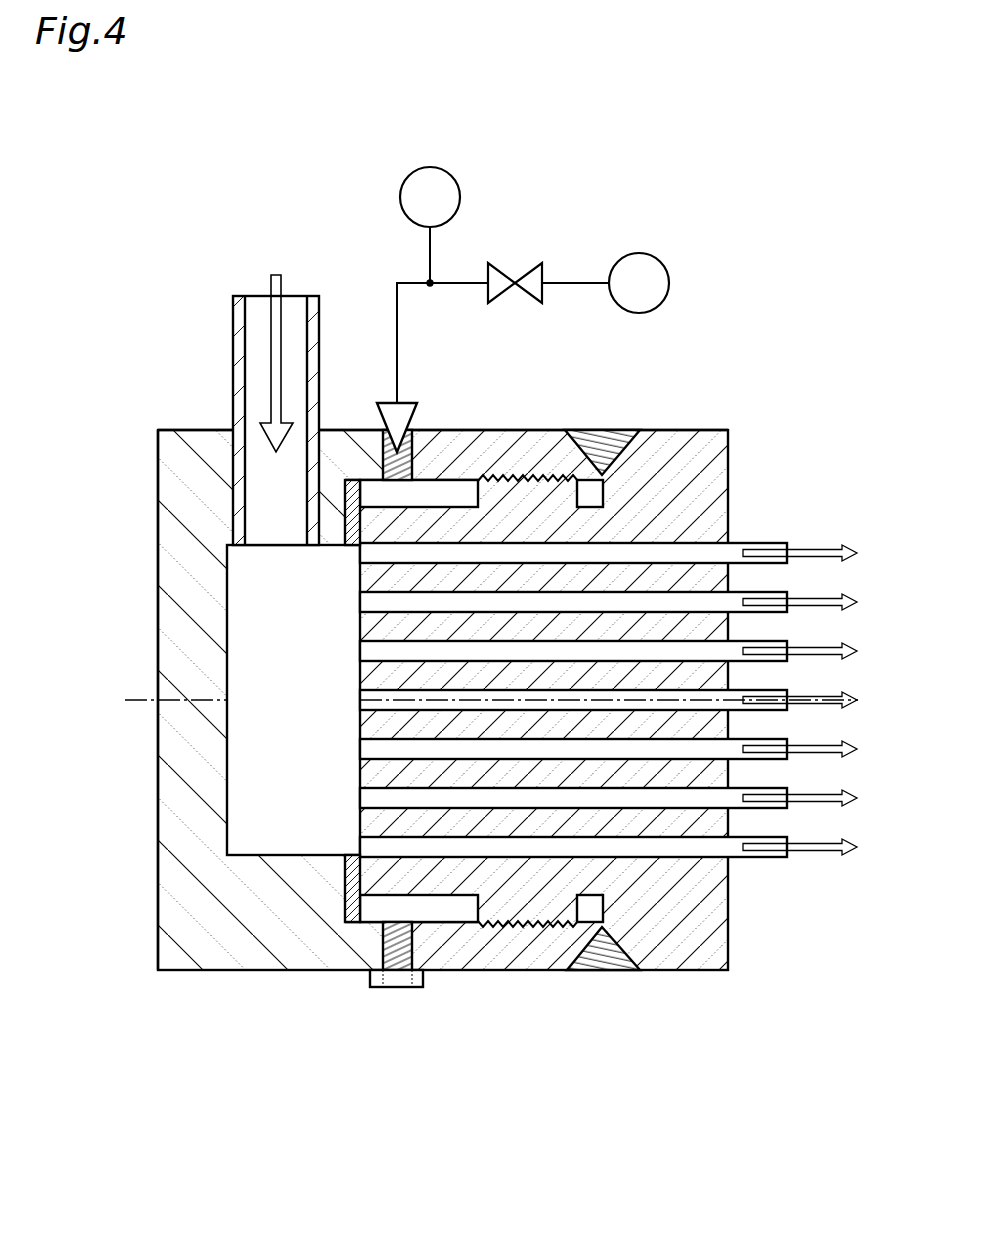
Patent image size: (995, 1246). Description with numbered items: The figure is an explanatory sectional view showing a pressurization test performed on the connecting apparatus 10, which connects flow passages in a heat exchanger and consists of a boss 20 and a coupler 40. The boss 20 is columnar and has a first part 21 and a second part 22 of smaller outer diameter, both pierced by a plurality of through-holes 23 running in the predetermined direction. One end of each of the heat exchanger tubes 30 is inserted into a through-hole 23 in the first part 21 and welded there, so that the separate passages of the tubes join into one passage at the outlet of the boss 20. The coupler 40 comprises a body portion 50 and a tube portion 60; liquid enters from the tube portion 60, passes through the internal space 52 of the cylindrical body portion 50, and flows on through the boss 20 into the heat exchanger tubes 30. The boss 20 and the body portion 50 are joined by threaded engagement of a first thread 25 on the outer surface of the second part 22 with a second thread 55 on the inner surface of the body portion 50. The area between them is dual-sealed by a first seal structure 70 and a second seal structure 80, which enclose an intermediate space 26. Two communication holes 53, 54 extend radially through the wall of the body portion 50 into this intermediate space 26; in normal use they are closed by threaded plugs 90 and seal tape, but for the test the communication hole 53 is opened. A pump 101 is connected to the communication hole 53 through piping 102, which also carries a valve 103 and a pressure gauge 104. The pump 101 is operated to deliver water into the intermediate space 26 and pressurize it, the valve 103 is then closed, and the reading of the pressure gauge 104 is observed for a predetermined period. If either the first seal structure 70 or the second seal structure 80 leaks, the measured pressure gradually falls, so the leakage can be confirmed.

The connecting apparatus 10 is at (695, 298).
The boss 20 is at (762, 398).
The first part 21 is at (690, 428).
The second part 22 is at (507, 513).
The through-holes 23 is at (647, 833).
The first thread 25 is at (548, 482).
The intermediate space 26 is at (452, 492).
The heat exchanger tubes 30 is at (765, 860).
The coupler 40 is at (126, 277).
The body portion 50 is at (195, 438).
The internal space 52 is at (258, 840).
The communication hole 53 is at (407, 452).
The communication hole 54 is at (416, 952).
The second thread 55 is at (515, 478).
The tube portion 60 is at (232, 333).
The first seal structure 70 is at (352, 495).
The second seal structure 80 is at (602, 440).
The threaded plugs 90 is at (398, 985).
The pump 101 is at (638, 253).
The piping 102 is at (583, 282).
The valve 103 is at (525, 275).
The pressure gauge 104 is at (449, 171).